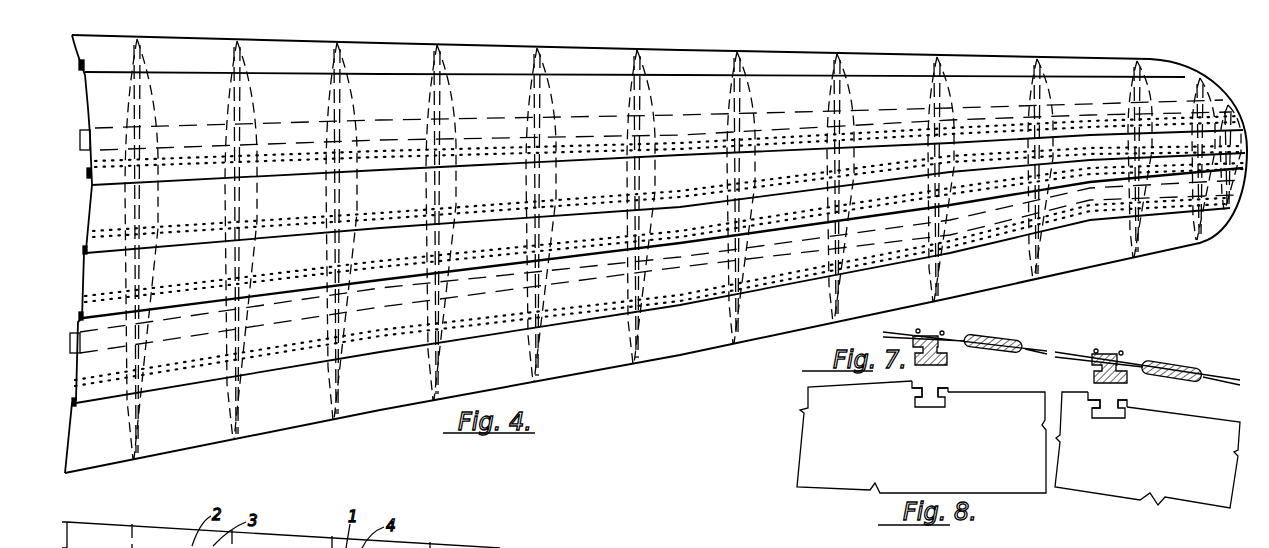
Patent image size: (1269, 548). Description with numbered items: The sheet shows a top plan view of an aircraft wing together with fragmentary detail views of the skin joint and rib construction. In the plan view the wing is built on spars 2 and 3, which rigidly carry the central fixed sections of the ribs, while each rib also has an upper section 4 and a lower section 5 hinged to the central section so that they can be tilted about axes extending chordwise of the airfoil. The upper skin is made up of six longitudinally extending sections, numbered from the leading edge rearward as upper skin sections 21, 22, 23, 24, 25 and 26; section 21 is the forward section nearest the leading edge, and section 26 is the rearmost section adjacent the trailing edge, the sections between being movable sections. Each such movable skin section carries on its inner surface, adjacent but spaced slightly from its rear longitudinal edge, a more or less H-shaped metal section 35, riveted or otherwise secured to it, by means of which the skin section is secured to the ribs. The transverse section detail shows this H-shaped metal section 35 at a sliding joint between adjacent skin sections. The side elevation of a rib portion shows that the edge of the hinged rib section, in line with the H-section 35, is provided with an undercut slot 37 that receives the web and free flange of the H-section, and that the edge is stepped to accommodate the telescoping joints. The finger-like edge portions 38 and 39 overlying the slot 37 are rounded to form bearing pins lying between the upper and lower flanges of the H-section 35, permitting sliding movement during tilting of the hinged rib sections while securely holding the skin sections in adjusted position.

In FIG. 4, the spar 2 is at (192, 128).
In FIG. 4, the spar 3 is at (166, 338).
In FIG. 4, the upper section 4 is at (360, 194).
In FIG. 8, the upper section 4 is at (1030, 487).
In FIG. 4, the lower section 5 is at (324, 195).
In FIG. 4, the upper skin section 21 is at (198, 61).
In FIG. 4, the upper skin section 22 is at (188, 96).
In FIG. 4, the upper skin section 23 is at (199, 213).
In FIG. 4, the upper skin section 24 is at (203, 277).
In FIG. 4, the upper skin section 25 is at (219, 362).
In FIG. 4, the upper skin section 26 is at (216, 419).
In FIG. 7, the H-shaped metal section 35 is at (948, 360).
In FIG. 8, the undercut slot 37 is at (930, 409).
In FIG. 8, the finger-like edge portion 38 is at (912, 392).
In FIG. 8, the finger-like edge portion 39 is at (946, 392).